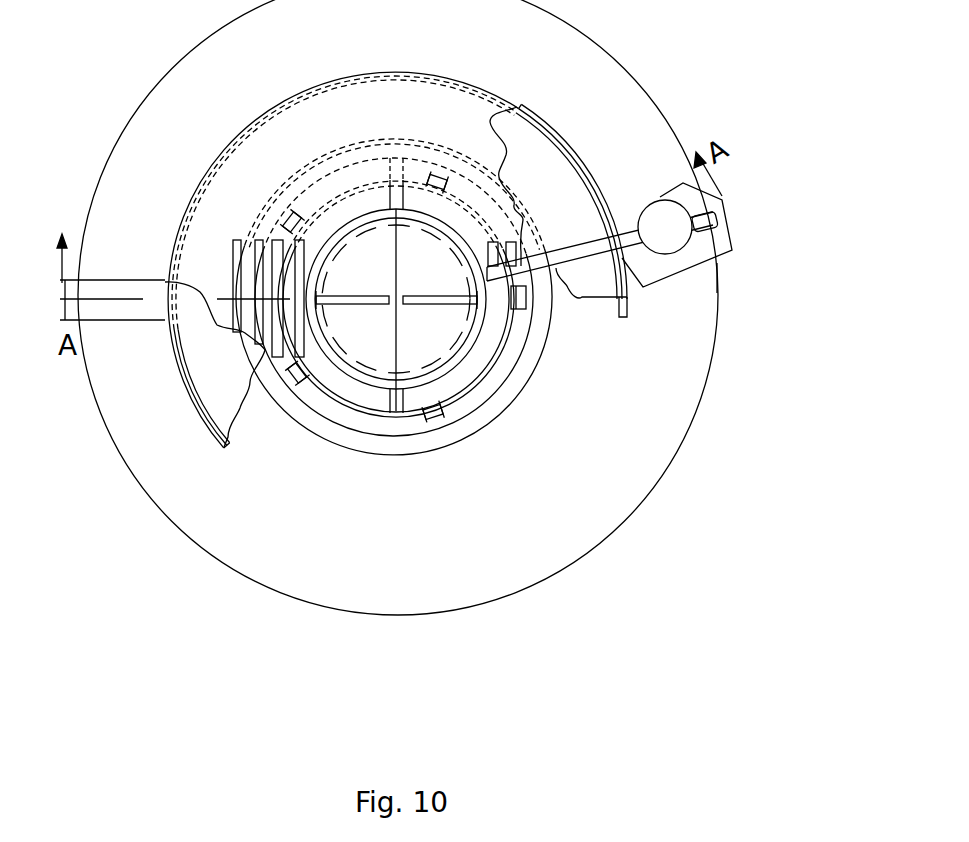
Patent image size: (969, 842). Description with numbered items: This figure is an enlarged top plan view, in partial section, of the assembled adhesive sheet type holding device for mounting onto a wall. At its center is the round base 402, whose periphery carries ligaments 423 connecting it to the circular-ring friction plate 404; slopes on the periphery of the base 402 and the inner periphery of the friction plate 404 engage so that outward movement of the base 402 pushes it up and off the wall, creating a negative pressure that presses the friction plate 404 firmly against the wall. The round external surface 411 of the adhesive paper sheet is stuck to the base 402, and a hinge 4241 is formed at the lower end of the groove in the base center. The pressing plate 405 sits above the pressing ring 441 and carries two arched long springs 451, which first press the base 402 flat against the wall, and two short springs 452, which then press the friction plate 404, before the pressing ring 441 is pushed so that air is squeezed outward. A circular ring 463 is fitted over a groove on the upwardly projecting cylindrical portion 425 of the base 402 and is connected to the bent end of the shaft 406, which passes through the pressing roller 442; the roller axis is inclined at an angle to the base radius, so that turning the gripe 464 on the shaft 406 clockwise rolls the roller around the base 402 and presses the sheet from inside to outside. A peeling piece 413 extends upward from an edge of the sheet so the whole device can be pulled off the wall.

The external surface 411 is at (556, 535).
The pressing ring 441 is at (550, 178).
The peeling piece 413 is at (108, 315).
The friction plate 404 is at (304, 412).
The circular ring 463 is at (374, 216).
The hinge 4241 is at (395, 410).
The cylindrical portion 425 is at (384, 282).
The long springs 451 is at (289, 215).
The short springs 452 is at (248, 236).
The ligaments 423 is at (437, 418).
The base 402 is at (480, 370).
The pressing plate 405 is at (482, 232).
The shaft 406 is at (718, 208).
The gripe 464 is at (655, 213).
The pressing roller 442 is at (700, 262).